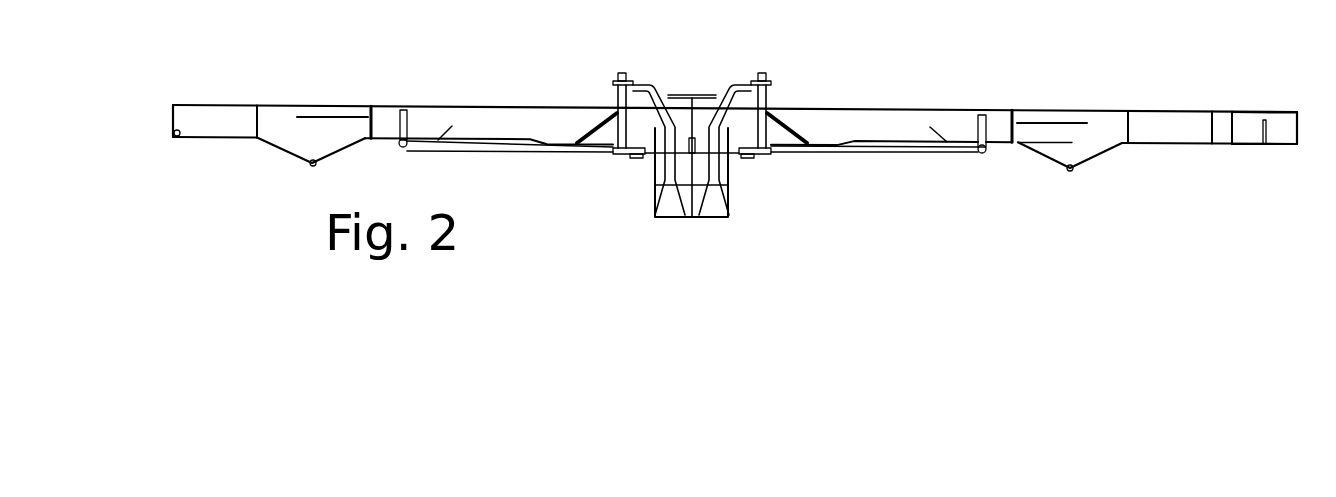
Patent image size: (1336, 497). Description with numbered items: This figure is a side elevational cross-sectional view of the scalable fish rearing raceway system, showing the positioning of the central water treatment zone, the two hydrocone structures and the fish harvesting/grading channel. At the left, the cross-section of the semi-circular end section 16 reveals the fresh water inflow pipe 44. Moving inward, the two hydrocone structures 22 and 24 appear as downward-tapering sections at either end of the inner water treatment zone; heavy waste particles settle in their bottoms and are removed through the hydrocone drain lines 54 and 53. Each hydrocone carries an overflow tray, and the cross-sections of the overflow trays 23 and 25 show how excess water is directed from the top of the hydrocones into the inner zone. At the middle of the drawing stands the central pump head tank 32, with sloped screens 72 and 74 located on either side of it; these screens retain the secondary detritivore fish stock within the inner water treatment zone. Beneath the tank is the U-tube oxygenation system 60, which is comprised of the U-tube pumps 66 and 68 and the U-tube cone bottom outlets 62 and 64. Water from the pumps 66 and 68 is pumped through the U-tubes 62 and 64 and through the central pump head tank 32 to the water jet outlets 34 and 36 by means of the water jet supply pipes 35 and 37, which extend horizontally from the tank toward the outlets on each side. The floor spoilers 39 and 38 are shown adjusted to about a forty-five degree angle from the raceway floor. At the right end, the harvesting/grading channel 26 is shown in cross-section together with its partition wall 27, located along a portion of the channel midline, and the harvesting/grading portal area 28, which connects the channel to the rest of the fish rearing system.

The semi-circular end section 16 is at (197, 103).
The hydrocone structure 22 is at (297, 85).
The overflow tray 23 is at (318, 117).
The hydrocone structure 24 is at (1088, 88).
The overflow tray 25 is at (1057, 123).
The harvesting/grading channel 26 is at (1283, 146).
The partition wall 27 is at (1262, 132).
The harvesting/grading portal area 28 is at (1226, 112).
The central pump head tank 32 is at (700, 68).
The water jet outlet 34 is at (410, 141).
The water jet supply pipe 35 is at (498, 146).
The water jet outlet 36 is at (970, 140).
The water jet supply pipe 37 is at (850, 148).
The floor spoiler 38 is at (932, 130).
The floor spoiler 39 is at (450, 128).
The fresh water inflow pipe 44 is at (178, 138).
The hydrocone drain line 53 is at (1072, 170).
The hydrocone drain line 54 is at (312, 165).
The U-tube oxygenation system 60 is at (645, 183).
The U-tube cone bottom outlet 62 is at (670, 206).
The U-tube cone bottom outlet 64 is at (707, 203).
The U-tube pump 66 is at (620, 73).
The U-tube pump 68 is at (768, 75).
The sloped screen 72 is at (600, 122).
The sloped screen 74 is at (790, 128).